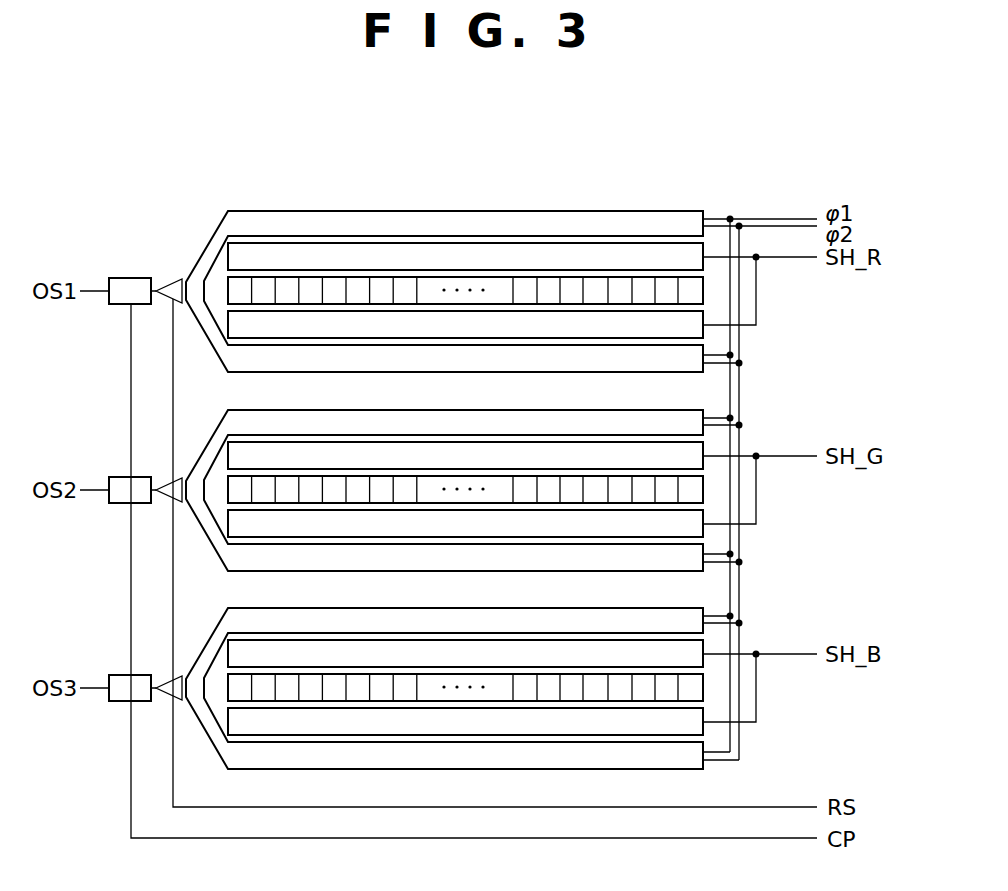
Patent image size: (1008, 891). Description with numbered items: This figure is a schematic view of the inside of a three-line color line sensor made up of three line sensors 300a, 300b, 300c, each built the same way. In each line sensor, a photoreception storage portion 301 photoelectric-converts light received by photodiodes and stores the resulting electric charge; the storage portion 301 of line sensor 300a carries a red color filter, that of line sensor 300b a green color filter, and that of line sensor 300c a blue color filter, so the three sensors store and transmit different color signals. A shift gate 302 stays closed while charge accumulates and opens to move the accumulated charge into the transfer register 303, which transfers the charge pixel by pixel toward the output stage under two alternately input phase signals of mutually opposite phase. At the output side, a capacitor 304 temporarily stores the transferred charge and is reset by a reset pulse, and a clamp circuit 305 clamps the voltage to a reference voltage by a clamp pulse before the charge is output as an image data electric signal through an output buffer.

The line sensor 300a is at (692, 203).
The line sensor 300b is at (762, 428).
The line sensor 300c is at (757, 638).
The photoreception storage portion 301 is at (482, 282).
The shift gate 302 is at (390, 252).
The transfer register 303 is at (293, 213).
The capacitor 304 is at (172, 277).
The clamp circuit 305 is at (115, 277).